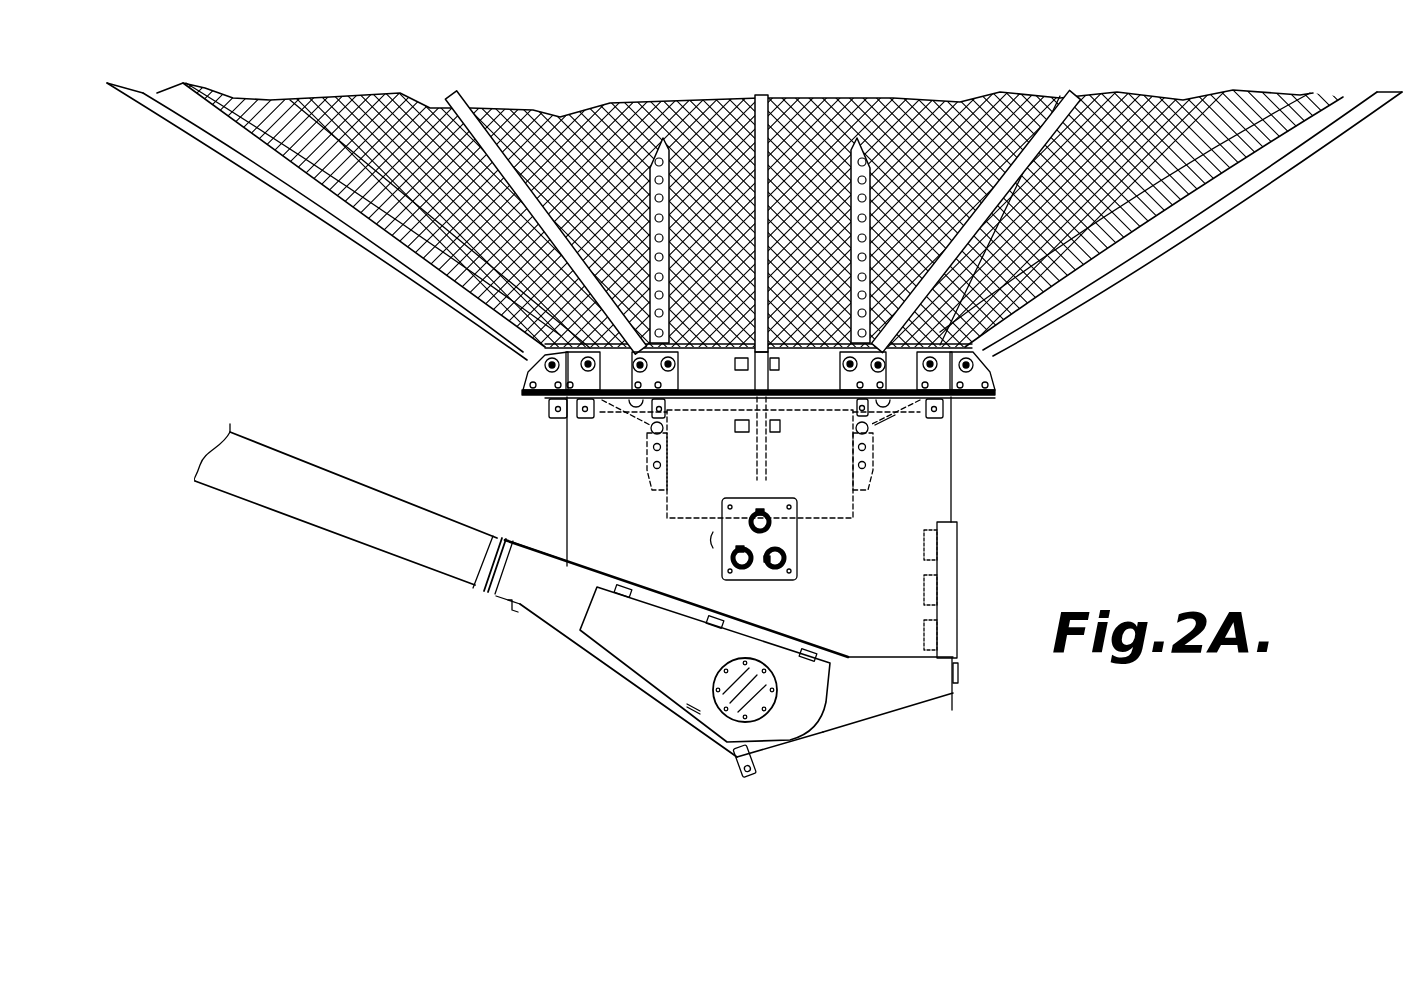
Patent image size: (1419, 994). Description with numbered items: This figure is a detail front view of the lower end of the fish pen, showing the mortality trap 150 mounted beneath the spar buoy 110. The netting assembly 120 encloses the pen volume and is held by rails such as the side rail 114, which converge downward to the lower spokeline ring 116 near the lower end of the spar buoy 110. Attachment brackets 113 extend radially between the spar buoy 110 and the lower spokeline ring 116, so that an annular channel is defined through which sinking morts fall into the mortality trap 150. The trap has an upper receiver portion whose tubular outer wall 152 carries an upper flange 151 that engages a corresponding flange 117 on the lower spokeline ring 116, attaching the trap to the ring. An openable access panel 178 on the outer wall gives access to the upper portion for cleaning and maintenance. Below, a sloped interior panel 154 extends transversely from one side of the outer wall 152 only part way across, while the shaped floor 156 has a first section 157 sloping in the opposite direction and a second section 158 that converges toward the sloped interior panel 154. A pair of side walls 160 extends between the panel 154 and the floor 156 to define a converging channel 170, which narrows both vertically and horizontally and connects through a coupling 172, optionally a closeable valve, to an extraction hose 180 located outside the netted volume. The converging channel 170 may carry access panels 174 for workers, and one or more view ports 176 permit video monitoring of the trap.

The spar buoy 110 is at (652, 125).
The netting assembly 120 is at (1250, 156).
The side rail 114 is at (1180, 233).
The lower spokeline ring 116 is at (1012, 383).
The flange 117 is at (995, 393).
The upper flange 151 is at (925, 412).
The attachment brackets 113 is at (882, 430).
The tubular outer wall 152 is at (953, 505).
The mortality trap 150 is at (1020, 524).
The openable access panel 178 is at (955, 577).
The extraction hose 180 is at (340, 468).
The sloped interior panel 154 is at (637, 578).
The coupling 172 is at (478, 590).
The side walls 160 is at (567, 605).
The converging channel 170 is at (592, 660).
The access panels 174 is at (660, 663).
The second section of the floor 158 is at (693, 732).
The view ports 176 is at (757, 712).
The shaped floor 156 is at (835, 738).
The first section of the floor 157 is at (920, 704).